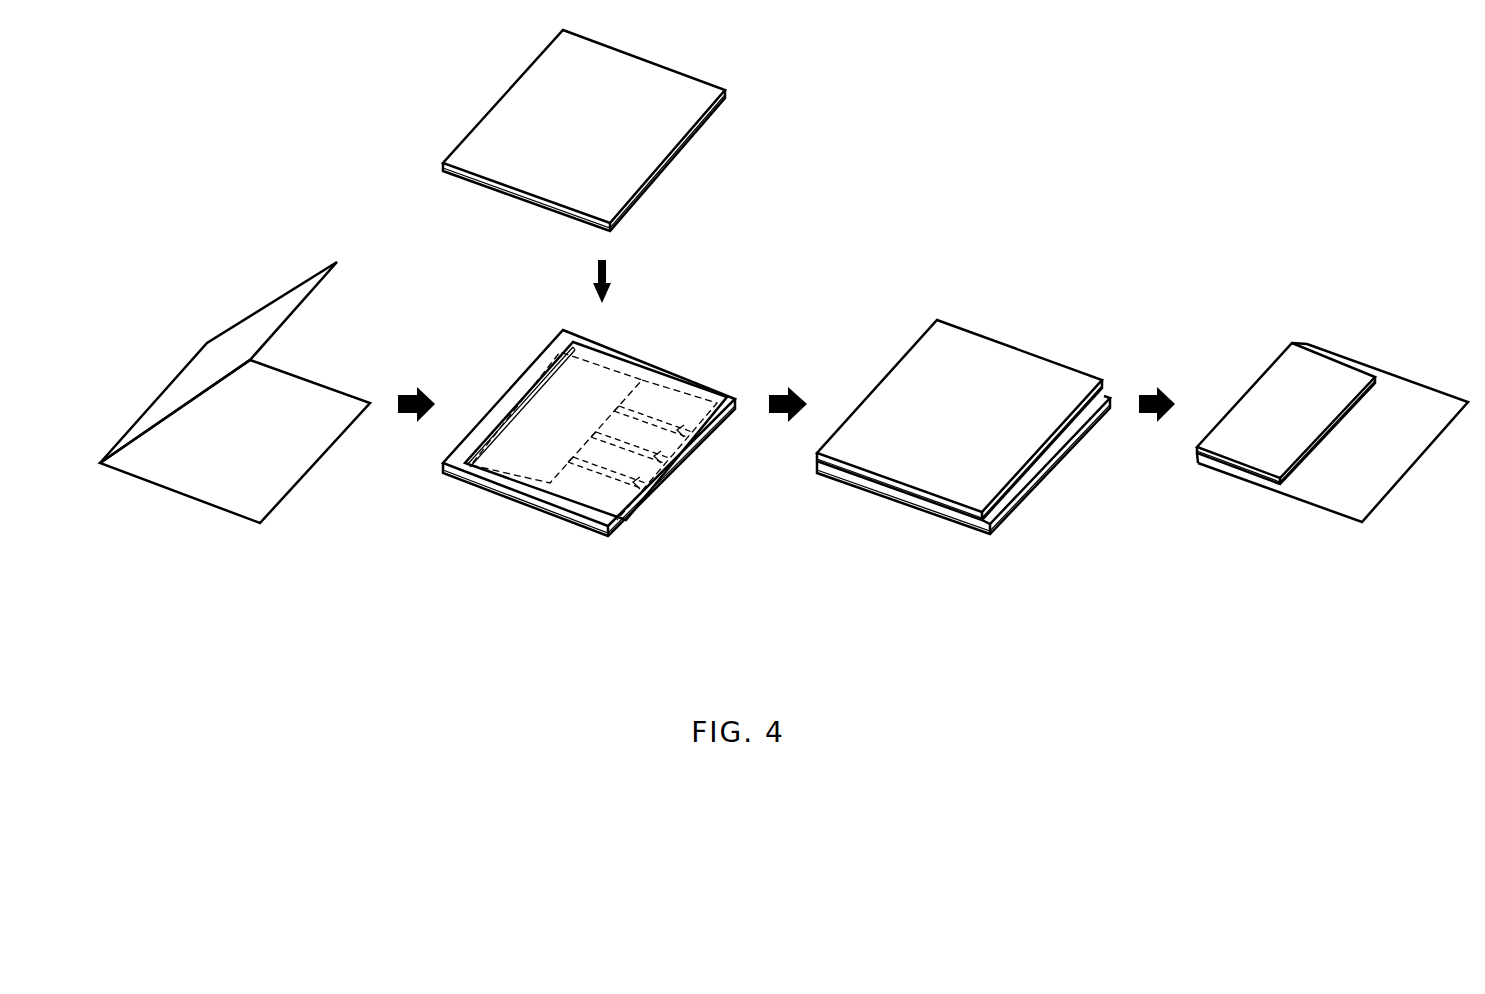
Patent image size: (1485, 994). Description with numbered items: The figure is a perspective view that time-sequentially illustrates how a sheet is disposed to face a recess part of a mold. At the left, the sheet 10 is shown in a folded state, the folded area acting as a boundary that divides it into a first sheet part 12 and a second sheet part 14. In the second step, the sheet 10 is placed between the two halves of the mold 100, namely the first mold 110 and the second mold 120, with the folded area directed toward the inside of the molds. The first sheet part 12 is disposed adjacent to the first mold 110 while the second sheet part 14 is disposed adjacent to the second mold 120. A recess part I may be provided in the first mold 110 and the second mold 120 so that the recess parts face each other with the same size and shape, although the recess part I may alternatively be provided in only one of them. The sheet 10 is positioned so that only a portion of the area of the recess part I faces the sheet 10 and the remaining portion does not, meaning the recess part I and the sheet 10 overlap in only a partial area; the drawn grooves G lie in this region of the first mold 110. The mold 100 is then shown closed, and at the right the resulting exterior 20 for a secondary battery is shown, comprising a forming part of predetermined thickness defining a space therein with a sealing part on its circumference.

The sheet 10 is at (598, 398).
The first sheet part 12 is at (185, 483).
The second sheet part 14 is at (290, 300).
The first mold 110 is at (508, 490).
The second mold 120 is at (629, 65).
The mold 100 is at (1009, 314).
The groove G is at (708, 434).
The recess part I is at (550, 393).
The exterior 20 is at (1378, 342).